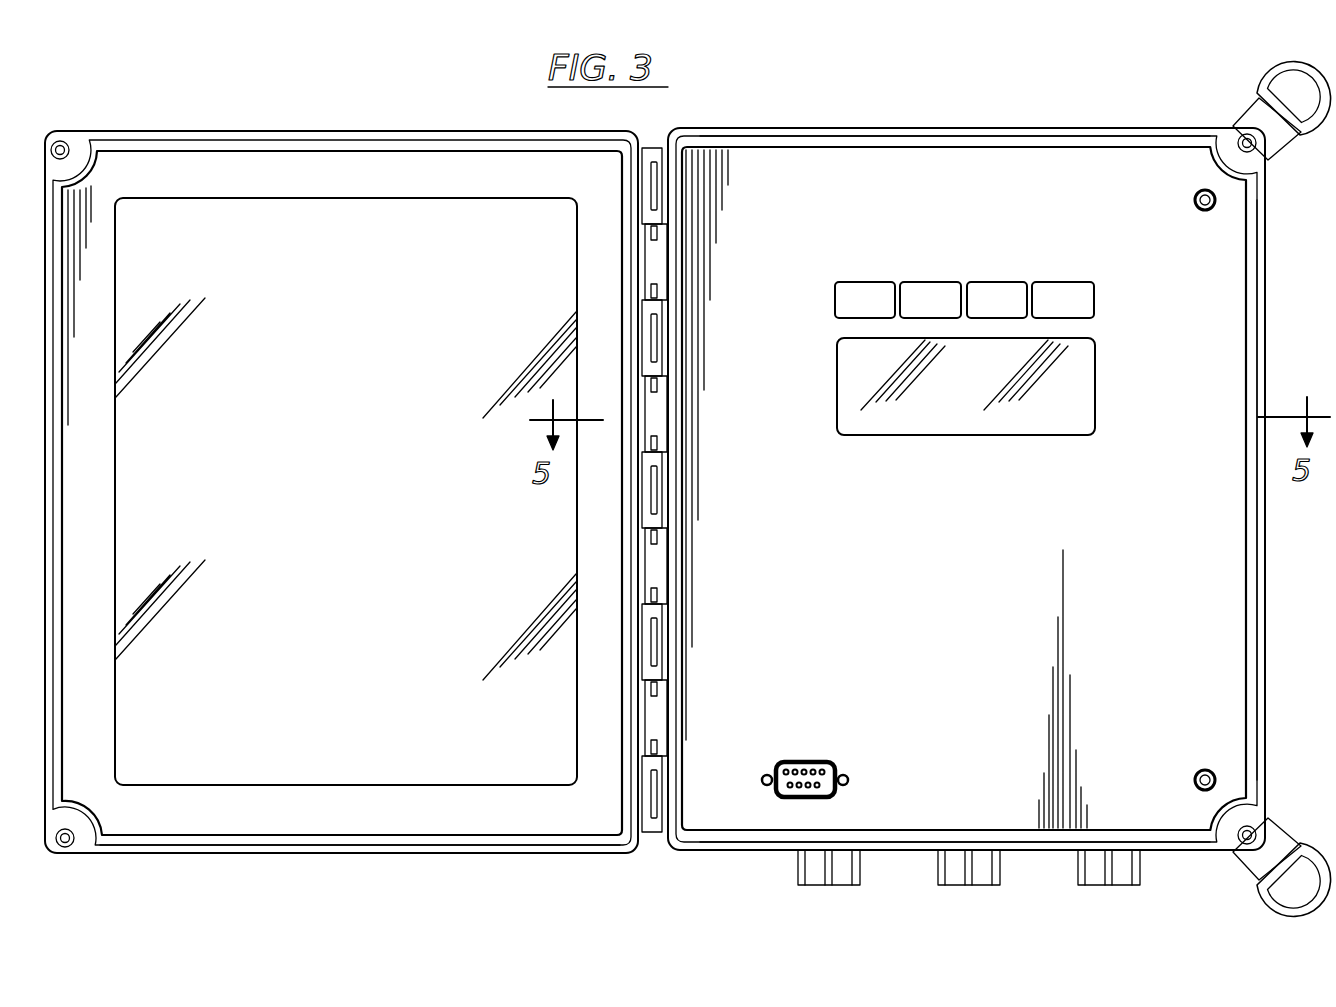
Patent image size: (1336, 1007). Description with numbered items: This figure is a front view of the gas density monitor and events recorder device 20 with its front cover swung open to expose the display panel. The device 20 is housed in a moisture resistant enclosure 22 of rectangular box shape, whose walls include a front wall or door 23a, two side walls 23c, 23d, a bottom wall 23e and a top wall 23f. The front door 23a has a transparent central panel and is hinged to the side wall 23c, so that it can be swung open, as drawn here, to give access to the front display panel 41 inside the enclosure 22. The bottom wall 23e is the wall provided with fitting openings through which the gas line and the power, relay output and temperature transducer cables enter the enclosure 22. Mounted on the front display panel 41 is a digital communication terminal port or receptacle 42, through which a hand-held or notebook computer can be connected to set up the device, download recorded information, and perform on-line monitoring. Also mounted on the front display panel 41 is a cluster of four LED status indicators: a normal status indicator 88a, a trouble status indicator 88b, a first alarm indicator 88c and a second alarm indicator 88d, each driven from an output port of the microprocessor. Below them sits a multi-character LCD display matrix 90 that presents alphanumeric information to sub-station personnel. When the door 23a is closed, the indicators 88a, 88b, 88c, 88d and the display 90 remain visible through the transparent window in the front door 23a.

The device 20 is at (940, 92).
The enclosure 22 is at (812, 122).
The front wall or door 23a is at (312, 826).
The side wall 23c is at (670, 840).
The side wall 23d is at (1328, 358).
The bottom wall 23e is at (880, 852).
The top wall 23f is at (1135, 105).
The front display panel 41 is at (993, 488).
The digital communication terminal port 42 is at (812, 762).
The normal status indicator 88a is at (847, 292).
The trouble status indicator 88b is at (912, 292).
The alarm No. 1 indicator 88c is at (977, 292).
The alarm No. 2 indicator 88d is at (1042, 292).
The multi-character LCD display matrix 90 is at (1080, 412).